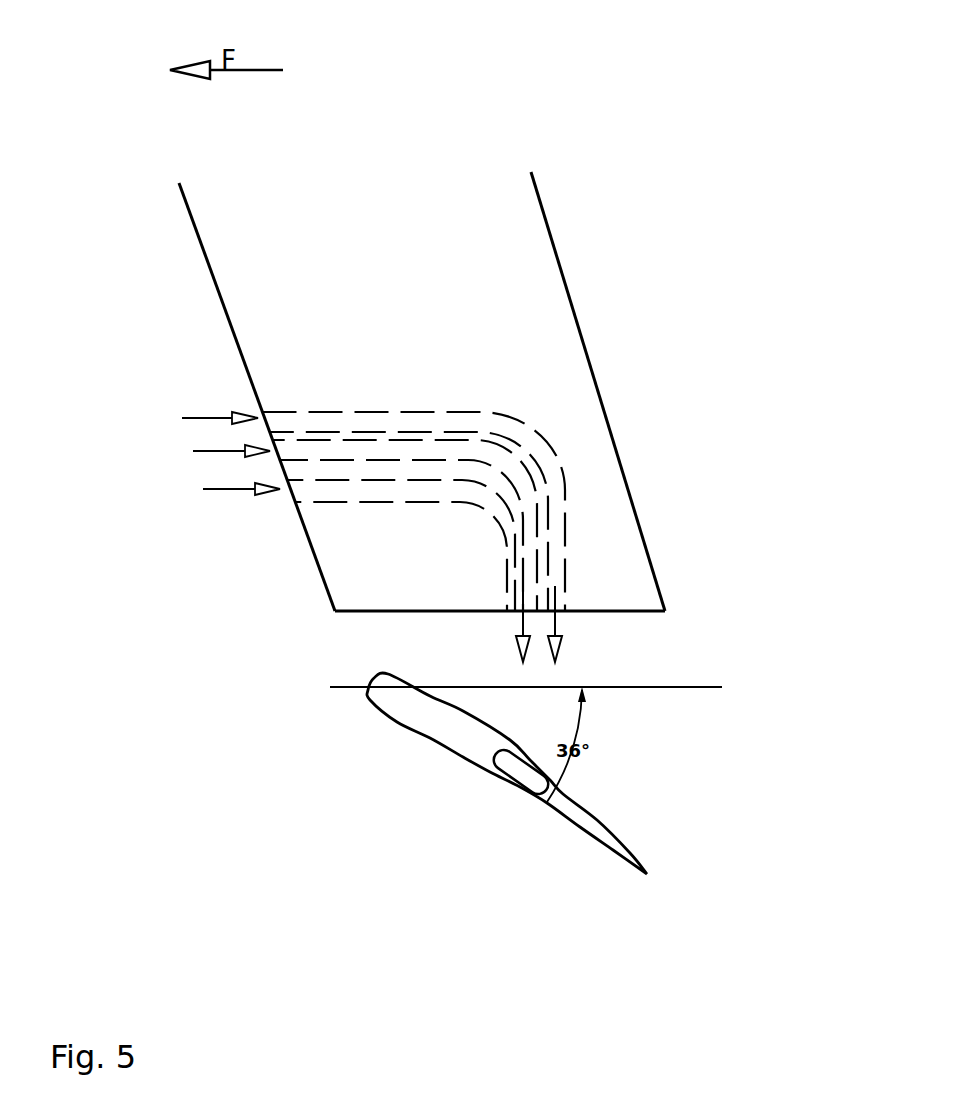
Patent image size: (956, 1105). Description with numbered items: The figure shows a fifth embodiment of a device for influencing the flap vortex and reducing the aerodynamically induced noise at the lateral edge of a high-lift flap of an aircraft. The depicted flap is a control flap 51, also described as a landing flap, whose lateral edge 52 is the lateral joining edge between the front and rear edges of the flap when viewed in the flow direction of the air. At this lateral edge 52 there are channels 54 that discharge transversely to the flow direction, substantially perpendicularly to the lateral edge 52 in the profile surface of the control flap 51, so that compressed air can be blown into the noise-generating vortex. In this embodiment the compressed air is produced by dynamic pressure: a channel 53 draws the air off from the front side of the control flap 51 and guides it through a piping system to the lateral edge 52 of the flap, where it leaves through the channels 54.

The control flap 51 is at (480, 245).
The lateral edge 52 is at (378, 603).
The channel 53 is at (307, 472).
The channels 54 is at (487, 613).